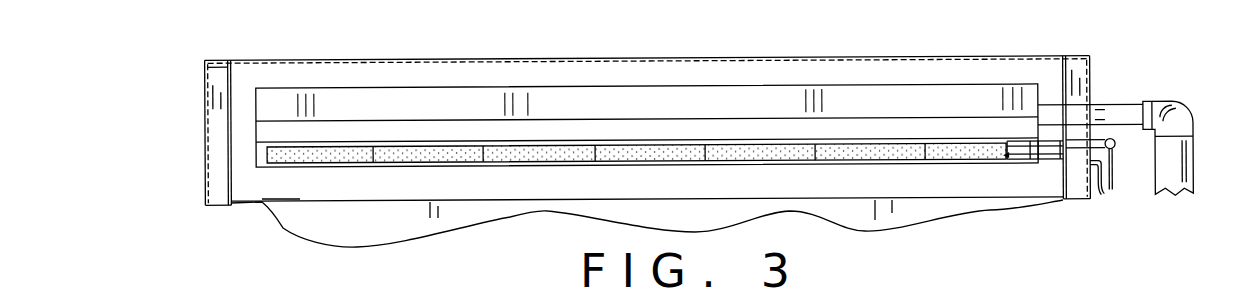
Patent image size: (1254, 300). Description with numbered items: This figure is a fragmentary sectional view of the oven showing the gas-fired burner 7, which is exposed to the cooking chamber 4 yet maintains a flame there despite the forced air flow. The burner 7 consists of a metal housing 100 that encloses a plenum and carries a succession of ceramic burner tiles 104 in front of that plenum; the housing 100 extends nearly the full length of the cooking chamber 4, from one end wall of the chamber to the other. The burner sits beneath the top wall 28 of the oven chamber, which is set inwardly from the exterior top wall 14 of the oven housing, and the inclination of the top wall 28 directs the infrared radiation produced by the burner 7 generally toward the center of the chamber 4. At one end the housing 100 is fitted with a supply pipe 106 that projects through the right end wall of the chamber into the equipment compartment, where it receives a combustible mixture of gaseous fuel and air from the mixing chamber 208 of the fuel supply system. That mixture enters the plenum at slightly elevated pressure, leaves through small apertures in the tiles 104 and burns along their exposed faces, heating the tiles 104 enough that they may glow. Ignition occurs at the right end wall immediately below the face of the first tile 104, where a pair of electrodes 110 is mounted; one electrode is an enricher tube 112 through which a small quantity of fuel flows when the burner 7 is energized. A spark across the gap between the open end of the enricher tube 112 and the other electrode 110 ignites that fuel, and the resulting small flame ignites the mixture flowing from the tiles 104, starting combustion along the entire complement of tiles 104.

The top wall 14 is at (437, 59).
The metal housing 100 is at (690, 102).
The ceramic burner tiles 104 is at (355, 153).
The top wall 28 is at (287, 183).
The cooking chamber 4 is at (848, 213).
The gas-fired burner 7 is at (944, 299).
The electrodes 110 is at (1037, 160).
The enricher tube 112 is at (1057, 162).
The supply pipe 106 is at (1108, 118).
The mixing chamber 208 is at (1178, 165).